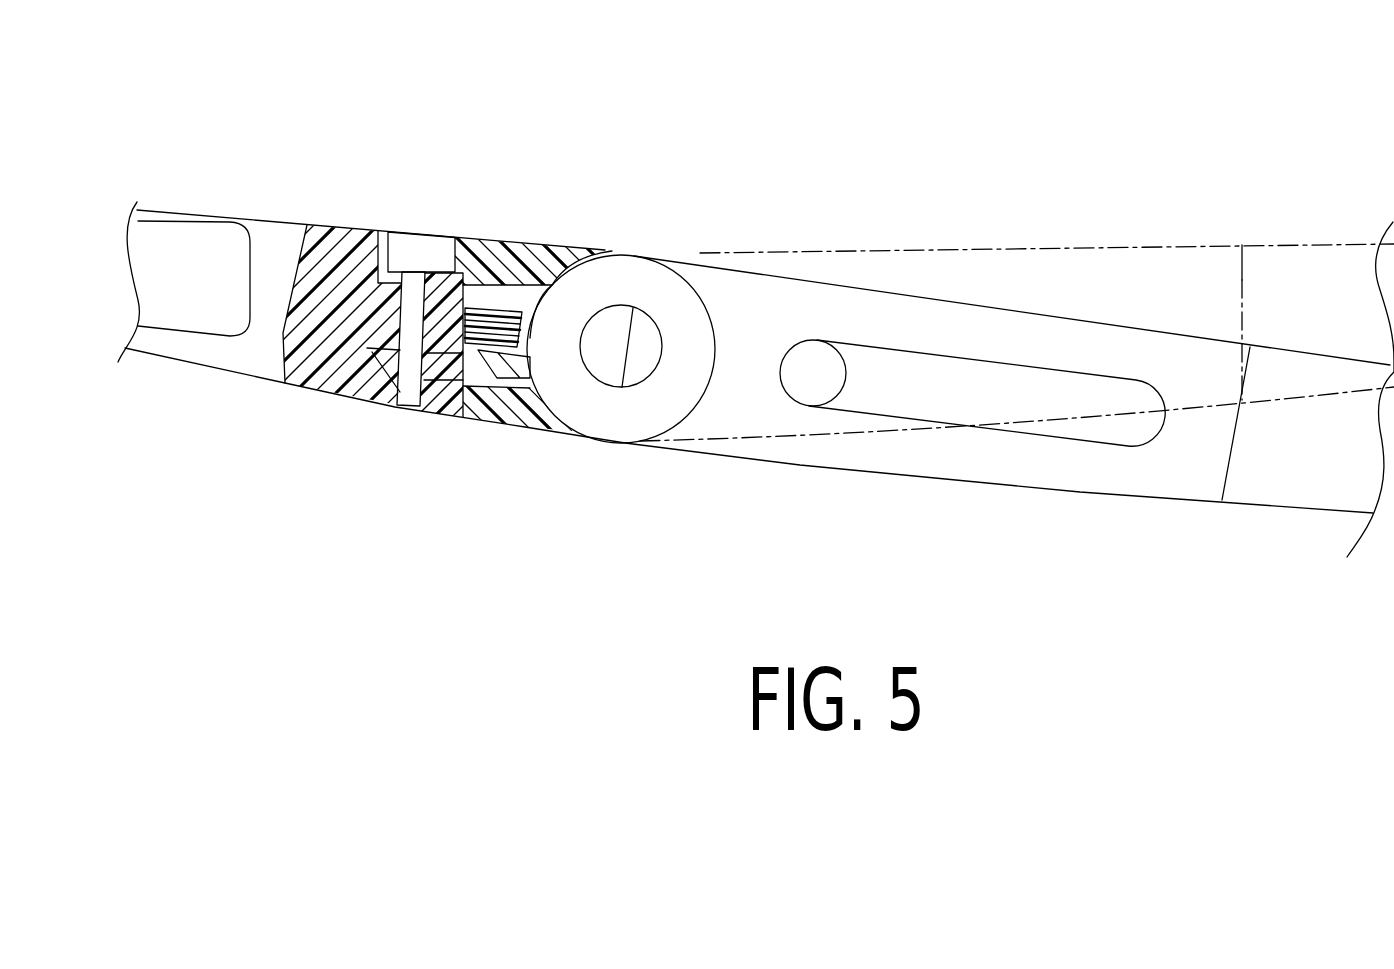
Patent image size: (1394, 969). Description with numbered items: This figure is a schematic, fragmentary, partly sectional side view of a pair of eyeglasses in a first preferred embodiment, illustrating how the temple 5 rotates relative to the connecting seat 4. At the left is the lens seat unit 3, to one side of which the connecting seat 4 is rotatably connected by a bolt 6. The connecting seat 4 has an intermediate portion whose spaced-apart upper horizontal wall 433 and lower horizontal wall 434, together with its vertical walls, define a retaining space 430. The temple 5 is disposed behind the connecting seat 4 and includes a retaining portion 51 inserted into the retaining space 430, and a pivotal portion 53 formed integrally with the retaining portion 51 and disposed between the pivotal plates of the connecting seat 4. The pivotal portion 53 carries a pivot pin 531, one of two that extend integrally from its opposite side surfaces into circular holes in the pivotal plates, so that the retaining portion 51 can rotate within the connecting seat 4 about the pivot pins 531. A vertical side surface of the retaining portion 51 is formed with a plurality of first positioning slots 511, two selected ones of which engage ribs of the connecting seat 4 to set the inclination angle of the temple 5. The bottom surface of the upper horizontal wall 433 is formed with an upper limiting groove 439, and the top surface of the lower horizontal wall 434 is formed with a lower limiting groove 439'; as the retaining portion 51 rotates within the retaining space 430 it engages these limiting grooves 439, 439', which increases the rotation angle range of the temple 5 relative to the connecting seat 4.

The lens seat unit 3 is at (272, 243).
The connecting seat 4 is at (338, 421).
The temple 5 is at (1046, 526).
The bolt 6 is at (415, 250).
The upper horizontal wall 433 is at (448, 248).
The upper limiting groove 439 is at (443, 249).
The retaining space 430 is at (515, 292).
The lower horizontal wall 434 is at (425, 400).
The lower limiting groove 439' is at (492, 463).
The retaining portion 51 is at (485, 352).
The first positioning slots 511 is at (528, 395).
The pivotal portion 53 is at (698, 412).
The pivot pins 531 is at (610, 360).